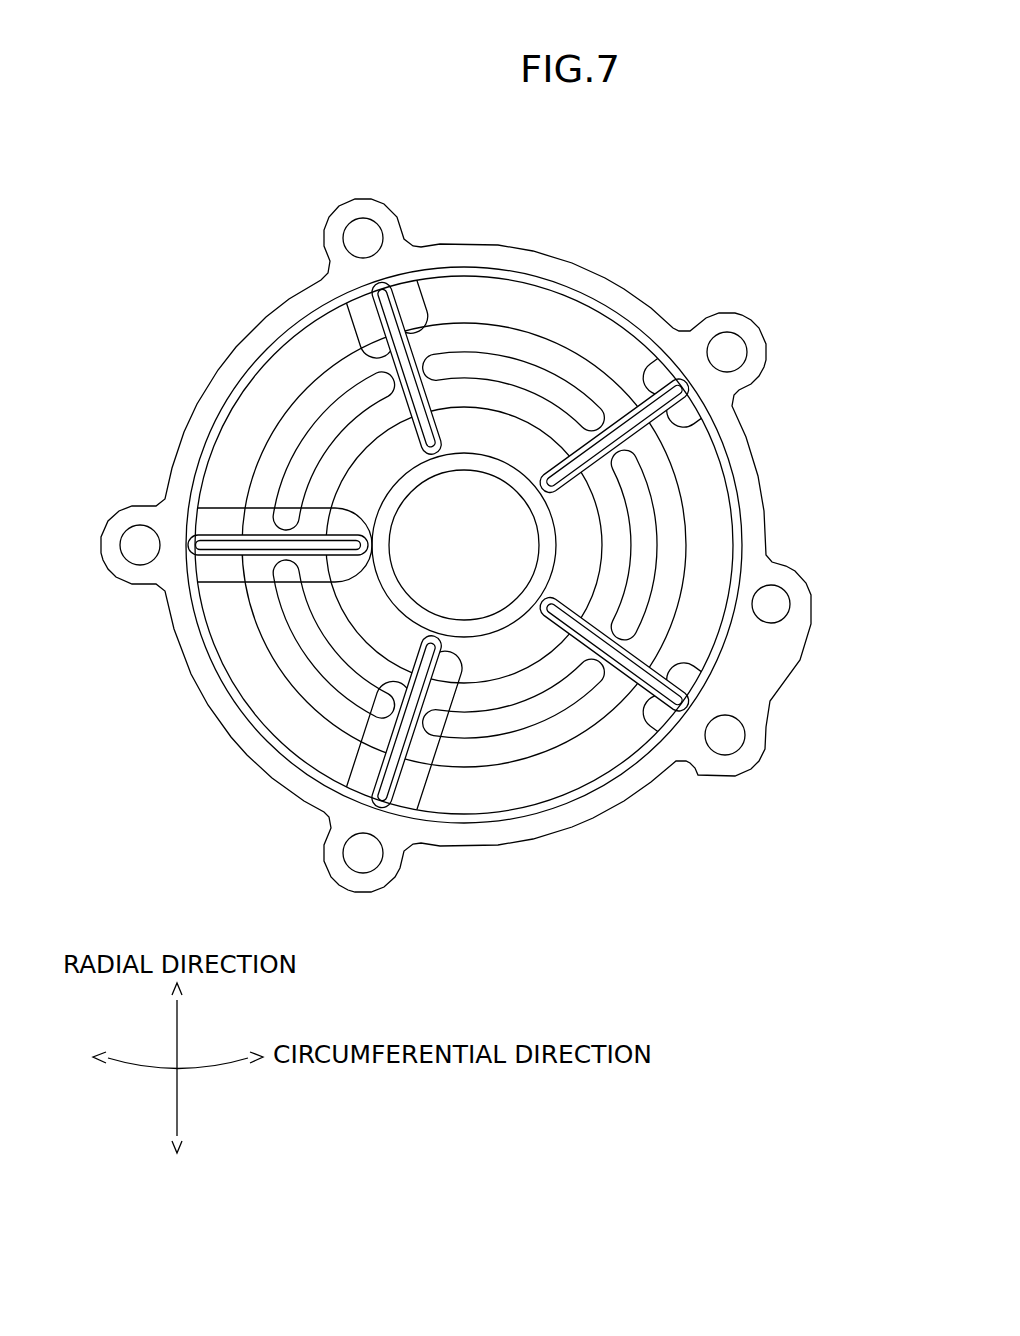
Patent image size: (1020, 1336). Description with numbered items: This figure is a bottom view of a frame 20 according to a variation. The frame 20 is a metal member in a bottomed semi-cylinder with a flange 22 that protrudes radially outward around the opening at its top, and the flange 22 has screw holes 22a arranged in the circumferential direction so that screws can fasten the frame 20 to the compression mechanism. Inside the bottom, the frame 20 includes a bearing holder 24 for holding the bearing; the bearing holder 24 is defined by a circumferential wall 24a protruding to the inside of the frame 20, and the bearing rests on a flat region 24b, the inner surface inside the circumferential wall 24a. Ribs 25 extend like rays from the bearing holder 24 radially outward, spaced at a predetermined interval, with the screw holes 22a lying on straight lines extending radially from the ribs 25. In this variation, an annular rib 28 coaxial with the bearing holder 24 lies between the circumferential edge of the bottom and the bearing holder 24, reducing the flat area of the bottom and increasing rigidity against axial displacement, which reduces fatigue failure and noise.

The frame 20 is at (167, 256).
The flange 22 is at (470, 248).
The screw holes 22a is at (362, 236).
The bearing holder 24 is at (626, 686).
The circumferential wall 24a is at (556, 539).
The flat region 24b is at (502, 593).
The ribs 25 is at (370, 328).
The annular rib 28 is at (528, 354).